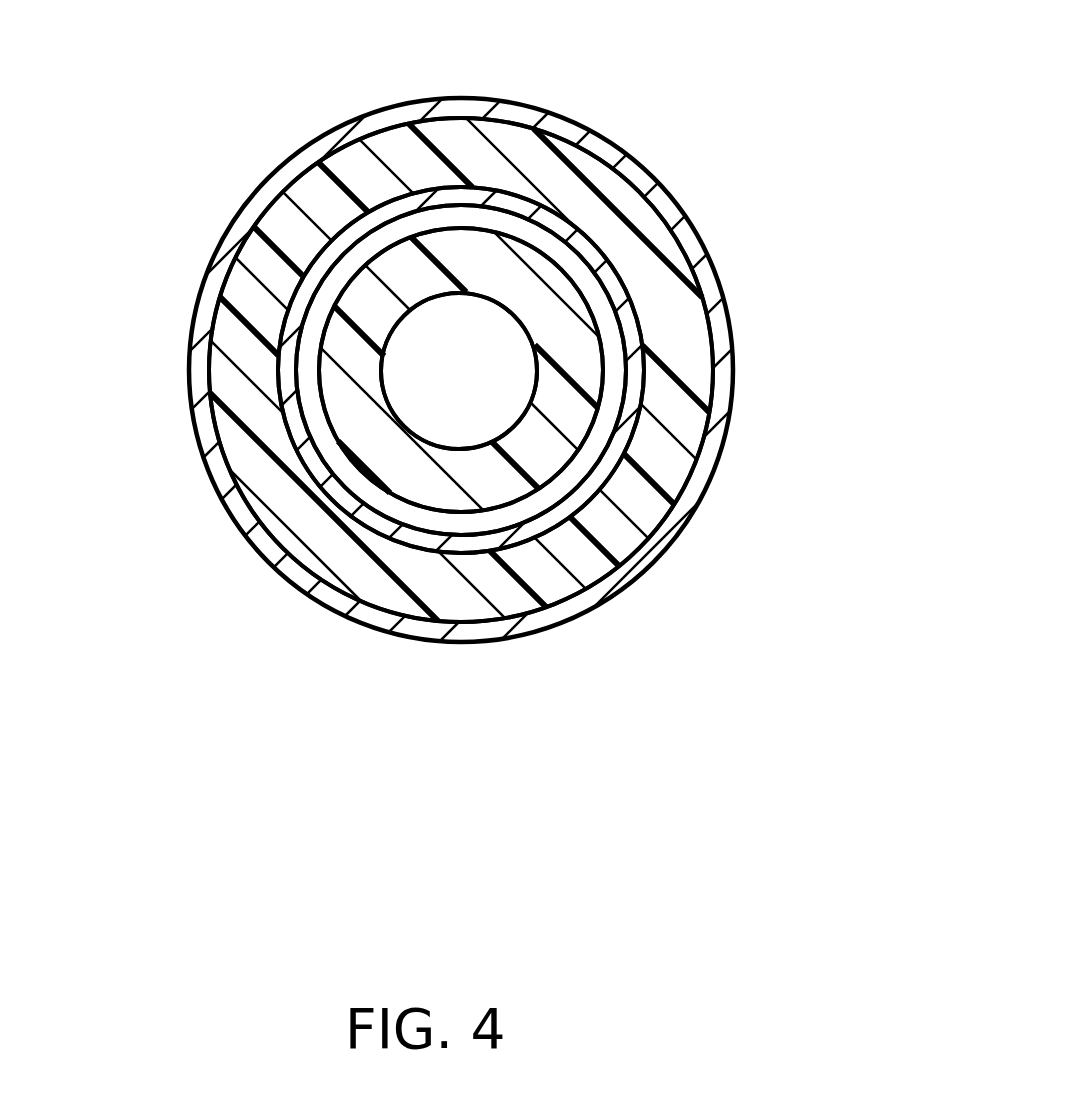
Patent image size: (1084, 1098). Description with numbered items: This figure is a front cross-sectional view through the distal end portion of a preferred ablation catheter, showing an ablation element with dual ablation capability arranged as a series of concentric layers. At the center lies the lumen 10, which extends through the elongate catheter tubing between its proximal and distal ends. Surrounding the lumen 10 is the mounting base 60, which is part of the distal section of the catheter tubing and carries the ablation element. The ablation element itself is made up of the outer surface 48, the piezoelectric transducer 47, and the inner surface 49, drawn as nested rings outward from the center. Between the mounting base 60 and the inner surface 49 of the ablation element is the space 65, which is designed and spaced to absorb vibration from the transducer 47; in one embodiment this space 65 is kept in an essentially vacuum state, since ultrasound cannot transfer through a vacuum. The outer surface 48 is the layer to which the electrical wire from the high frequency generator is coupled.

The lumen 10 is at (408, 362).
The piezoelectric transducer 47 is at (620, 195).
The outer surface 48 is at (580, 117).
The inner surface 49 is at (630, 313).
The mounting base 60 is at (400, 470).
The space 65 is at (605, 390).